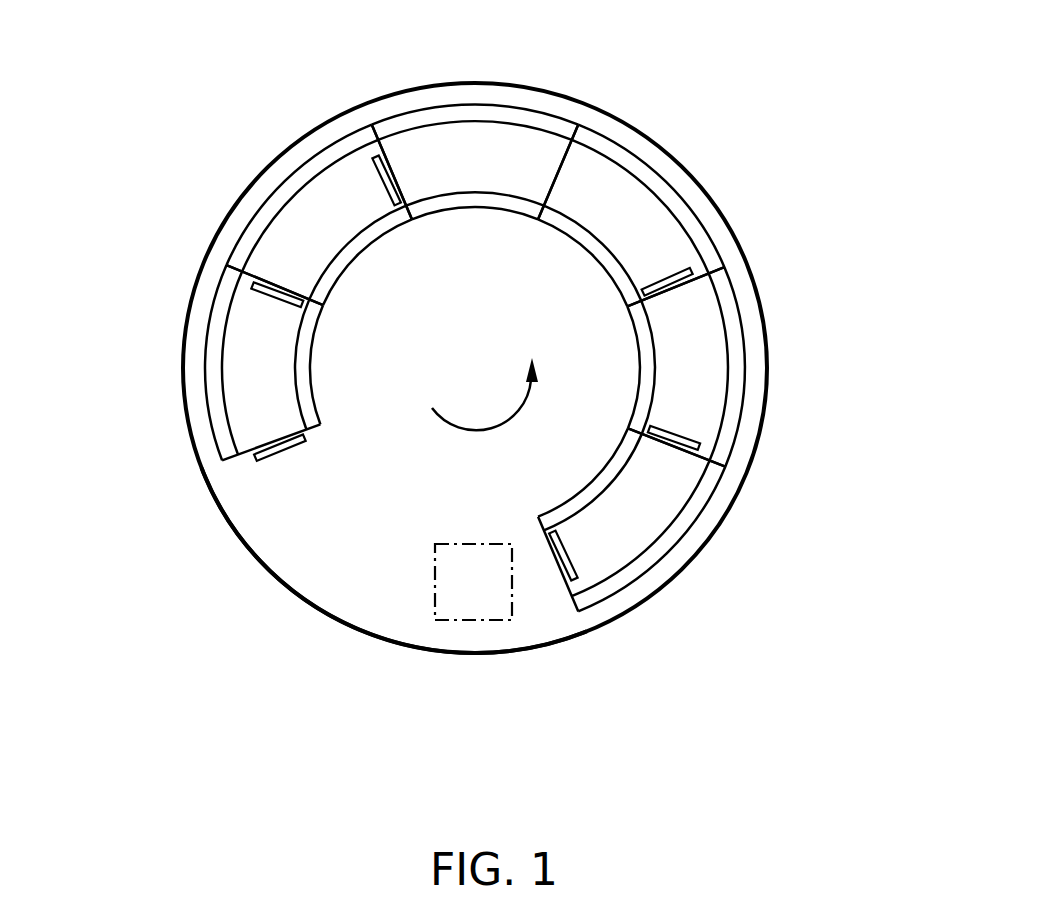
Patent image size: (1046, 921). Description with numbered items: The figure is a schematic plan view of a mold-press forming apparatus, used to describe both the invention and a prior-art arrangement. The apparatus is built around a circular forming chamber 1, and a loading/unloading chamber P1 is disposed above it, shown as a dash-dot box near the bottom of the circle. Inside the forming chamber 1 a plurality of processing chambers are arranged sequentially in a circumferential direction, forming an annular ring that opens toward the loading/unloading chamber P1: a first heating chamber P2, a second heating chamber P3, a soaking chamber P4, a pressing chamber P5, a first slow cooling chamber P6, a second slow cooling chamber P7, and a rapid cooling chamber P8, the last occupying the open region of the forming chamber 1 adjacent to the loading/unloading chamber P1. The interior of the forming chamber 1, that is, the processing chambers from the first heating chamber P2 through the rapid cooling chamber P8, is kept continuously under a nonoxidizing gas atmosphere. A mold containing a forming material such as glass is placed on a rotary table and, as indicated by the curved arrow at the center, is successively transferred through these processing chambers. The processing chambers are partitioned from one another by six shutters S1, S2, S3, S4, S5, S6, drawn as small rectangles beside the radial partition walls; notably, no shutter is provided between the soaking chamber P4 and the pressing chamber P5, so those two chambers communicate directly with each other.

The forming chamber 1 is at (612, 118).
The loading/unloading chamber P1 is at (475, 673).
The first heating chamber P2 is at (742, 537).
The second heating chamber P3 is at (790, 332).
The soaking chamber P4 is at (718, 175).
The pressing chamber P5 is at (443, 63).
The first slow cooling chamber P6 is at (222, 188).
The second slow cooling chamber P7 is at (165, 303).
The rapid cooling chamber P8 is at (250, 602).
The shutter S1 is at (573, 556).
The shutter S2 is at (674, 434).
The shutter S3 is at (667, 275).
The shutter S4 is at (377, 181).
The shutter S5 is at (276, 304).
The shutter S6 is at (280, 462).